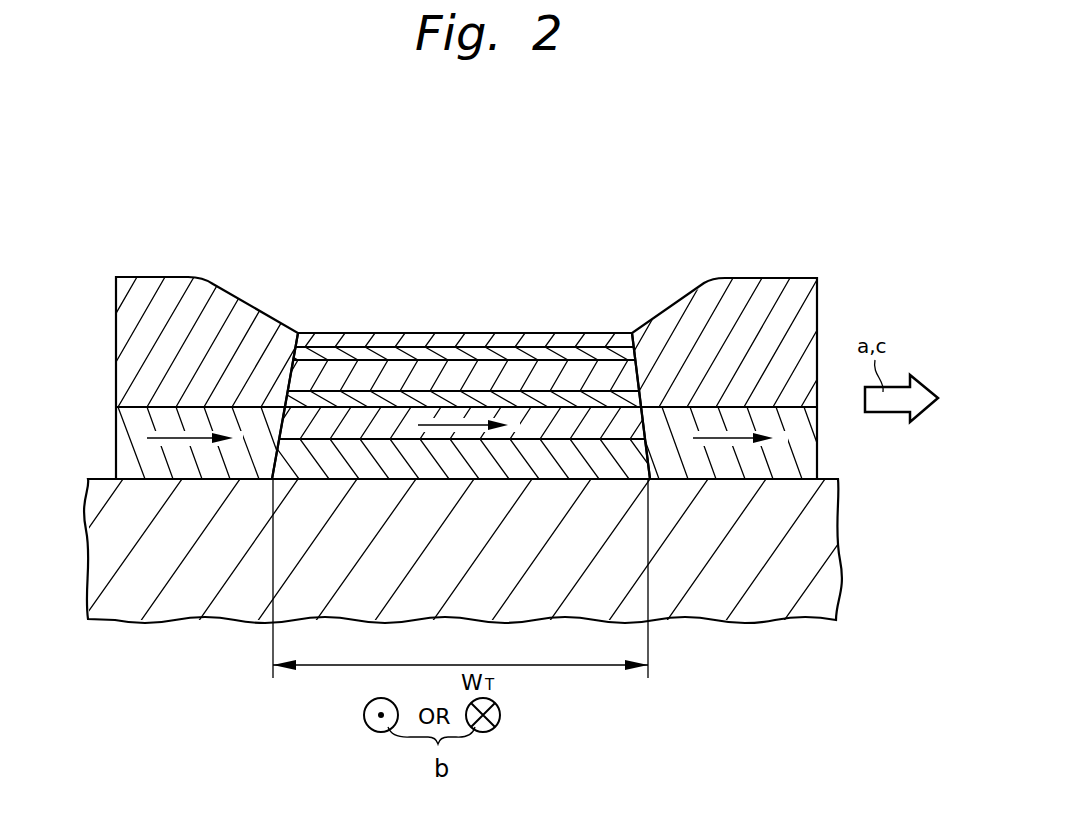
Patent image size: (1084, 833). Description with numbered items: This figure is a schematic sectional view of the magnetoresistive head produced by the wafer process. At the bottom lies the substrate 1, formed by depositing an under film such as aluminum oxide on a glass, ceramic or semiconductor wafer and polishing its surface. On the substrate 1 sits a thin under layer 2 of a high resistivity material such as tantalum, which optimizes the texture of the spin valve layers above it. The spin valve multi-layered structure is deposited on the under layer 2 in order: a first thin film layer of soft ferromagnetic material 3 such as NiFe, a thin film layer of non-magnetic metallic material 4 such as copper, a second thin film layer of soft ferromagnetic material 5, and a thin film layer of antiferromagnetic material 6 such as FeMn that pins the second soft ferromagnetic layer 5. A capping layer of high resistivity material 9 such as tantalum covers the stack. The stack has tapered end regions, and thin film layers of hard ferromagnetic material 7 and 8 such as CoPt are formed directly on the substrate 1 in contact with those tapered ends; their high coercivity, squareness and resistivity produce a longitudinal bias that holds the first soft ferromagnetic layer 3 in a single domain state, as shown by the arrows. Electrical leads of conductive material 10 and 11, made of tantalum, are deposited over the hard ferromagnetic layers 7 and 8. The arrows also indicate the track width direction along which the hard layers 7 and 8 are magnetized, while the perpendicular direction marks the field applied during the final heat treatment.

The substrate 1 is at (182, 602).
The under layer 2 is at (371, 462).
The first thin film layer of soft ferromagnetic material 3 is at (327, 423).
The thin film layer of non-magnetic metallic material 4 is at (385, 397).
The second thin film layer of soft ferromagnetic material 5 is at (453, 377).
The thin film layer of antiferromagnetic material 6 is at (525, 352).
The thin film layer of hard ferromagnetic material 7 is at (128, 446).
The thin film layer of hard ferromagnetic material 8 is at (803, 443).
The capping layer of high resistivity material 9 is at (584, 342).
The electrical lead of conductive material 10 is at (175, 297).
The electrical lead of conductive material 11 is at (738, 291).